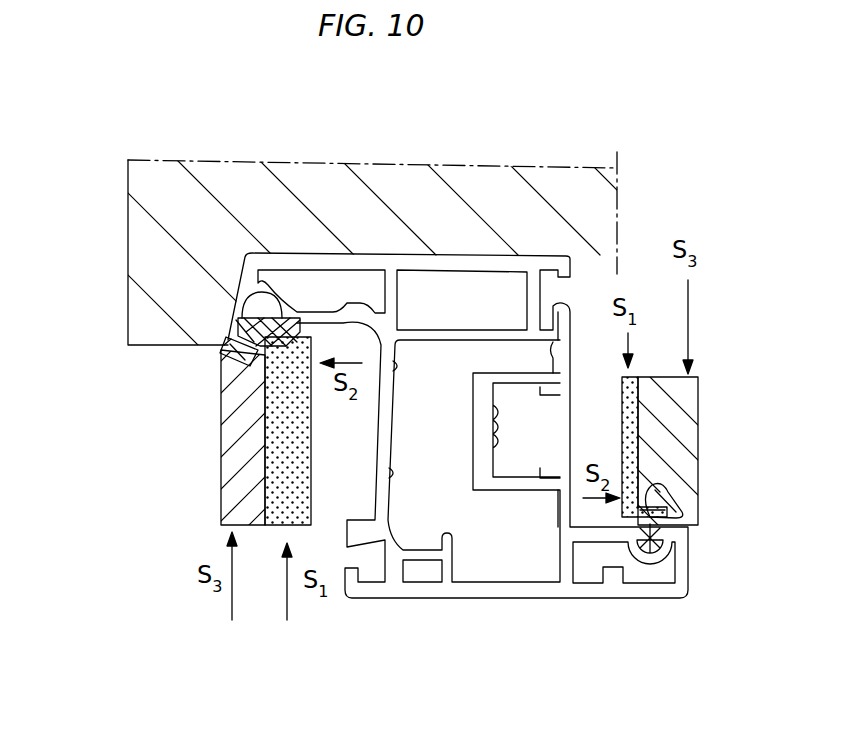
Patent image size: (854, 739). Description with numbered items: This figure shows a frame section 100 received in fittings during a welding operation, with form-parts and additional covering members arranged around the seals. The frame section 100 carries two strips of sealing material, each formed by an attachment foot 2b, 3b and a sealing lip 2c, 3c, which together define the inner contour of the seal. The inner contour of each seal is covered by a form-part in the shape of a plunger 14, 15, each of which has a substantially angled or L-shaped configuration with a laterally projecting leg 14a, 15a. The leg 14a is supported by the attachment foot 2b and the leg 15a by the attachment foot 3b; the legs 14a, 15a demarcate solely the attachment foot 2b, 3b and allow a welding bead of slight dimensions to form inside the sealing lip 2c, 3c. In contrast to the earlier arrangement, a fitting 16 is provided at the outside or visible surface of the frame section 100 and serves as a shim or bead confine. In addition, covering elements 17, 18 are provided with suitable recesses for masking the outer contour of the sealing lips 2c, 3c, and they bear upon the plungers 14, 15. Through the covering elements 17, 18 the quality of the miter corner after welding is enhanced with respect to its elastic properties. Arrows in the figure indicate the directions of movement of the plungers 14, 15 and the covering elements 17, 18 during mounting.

The frame section 100 is at (421, 602).
The fitting 16 is at (148, 232).
The covering element 18 is at (243, 455).
The plunger 15 is at (290, 473).
The laterally projecting leg 15a is at (228, 377).
The attachment foot 3b is at (238, 302).
The sealing lip 3c is at (223, 340).
The plunger 14 is at (622, 415).
The laterally projecting leg 14a is at (617, 513).
The covering element 17 is at (677, 430).
The sealing lip 2c is at (690, 488).
The attachment foot 2b is at (665, 543).